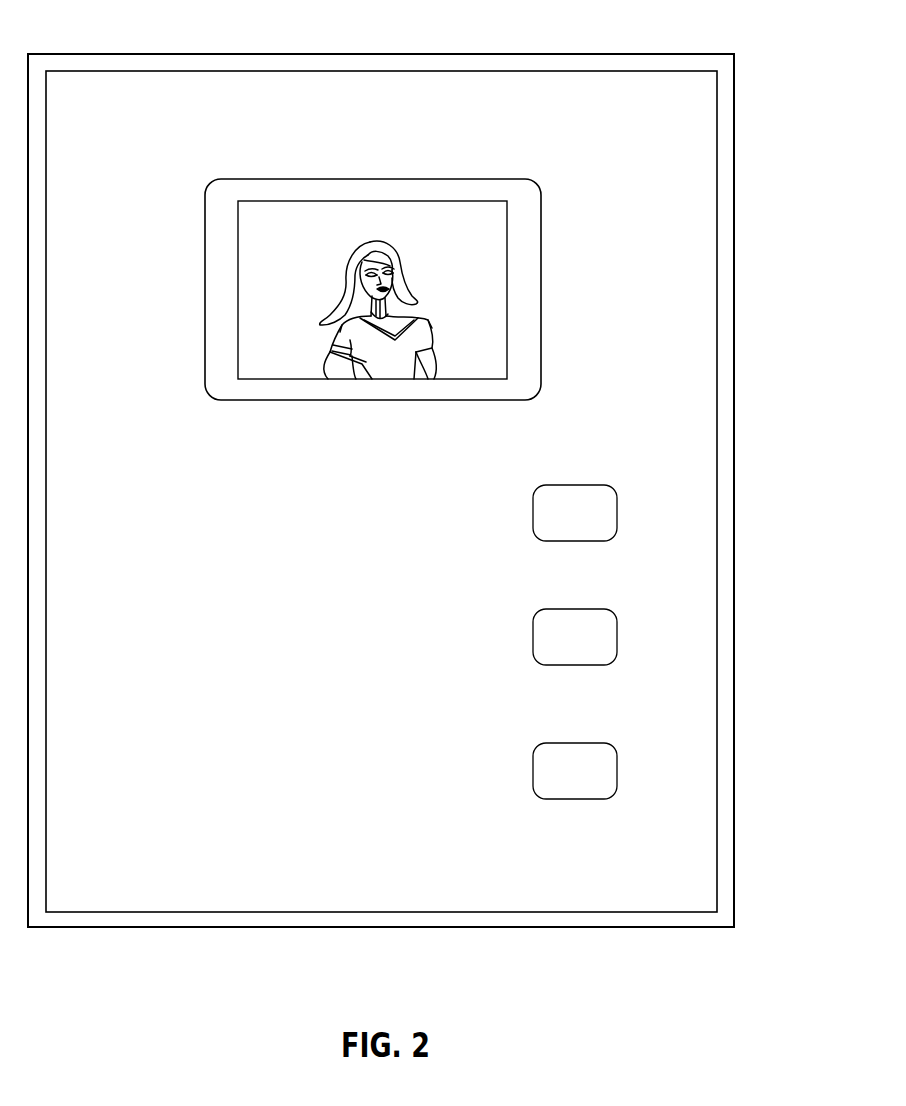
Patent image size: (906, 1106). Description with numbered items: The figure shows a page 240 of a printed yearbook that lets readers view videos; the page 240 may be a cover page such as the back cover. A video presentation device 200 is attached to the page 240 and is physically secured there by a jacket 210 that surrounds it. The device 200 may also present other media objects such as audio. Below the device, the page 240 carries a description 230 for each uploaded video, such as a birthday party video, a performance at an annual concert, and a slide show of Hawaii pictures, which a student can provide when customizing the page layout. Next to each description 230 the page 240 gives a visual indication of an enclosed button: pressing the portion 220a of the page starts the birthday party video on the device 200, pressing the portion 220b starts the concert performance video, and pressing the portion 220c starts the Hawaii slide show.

The page 240 is at (313, 53).
The jacket 210 is at (541, 340).
The video presentation device 200 is at (507, 239).
The description 230 is at (247, 505).
The portion of the page 220a is at (617, 508).
The portion of the page 220b is at (617, 634).
The portion of the page 220c is at (617, 769).